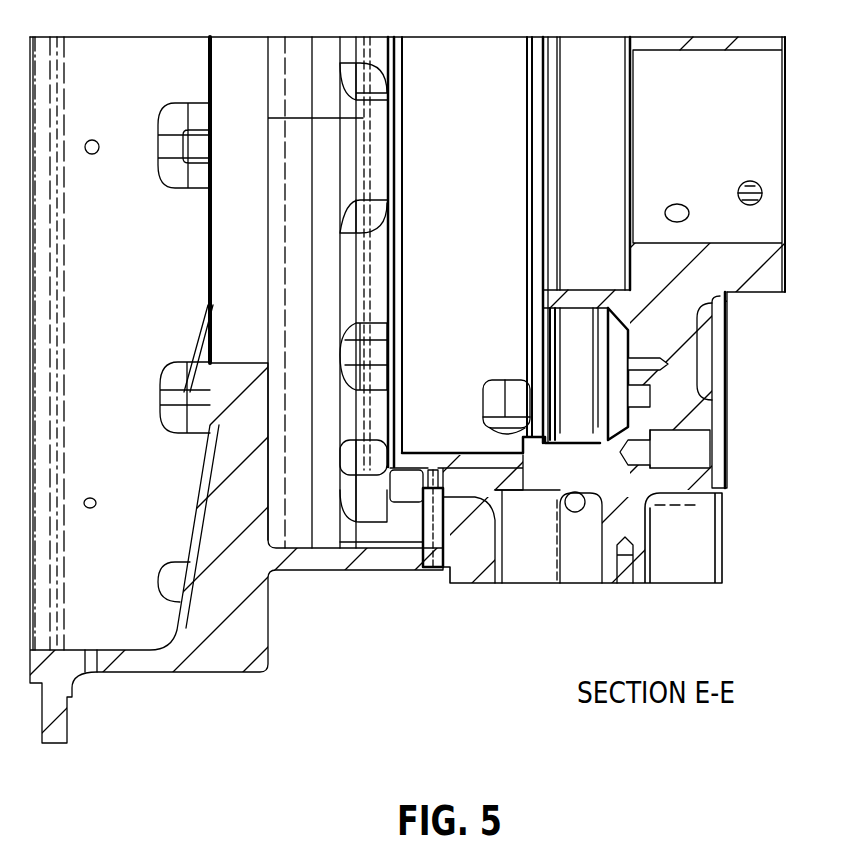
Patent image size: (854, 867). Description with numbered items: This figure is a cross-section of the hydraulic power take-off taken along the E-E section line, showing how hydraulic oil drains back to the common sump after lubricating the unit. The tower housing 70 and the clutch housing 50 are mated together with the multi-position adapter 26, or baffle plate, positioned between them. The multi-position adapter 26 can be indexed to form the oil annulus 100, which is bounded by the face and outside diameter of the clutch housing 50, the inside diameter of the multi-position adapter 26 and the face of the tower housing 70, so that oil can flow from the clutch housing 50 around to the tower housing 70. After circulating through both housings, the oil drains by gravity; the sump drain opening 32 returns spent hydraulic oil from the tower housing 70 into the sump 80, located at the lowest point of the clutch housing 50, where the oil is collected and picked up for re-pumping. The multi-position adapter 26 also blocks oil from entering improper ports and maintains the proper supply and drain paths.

The multi-position adapter 26 is at (428, 570).
The sump drain opening 32 is at (425, 518).
The clutch housing 50 is at (718, 586).
The tower housing 70 is at (168, 662).
The sump 80 is at (535, 573).
The oil annulus 100 is at (445, 478).